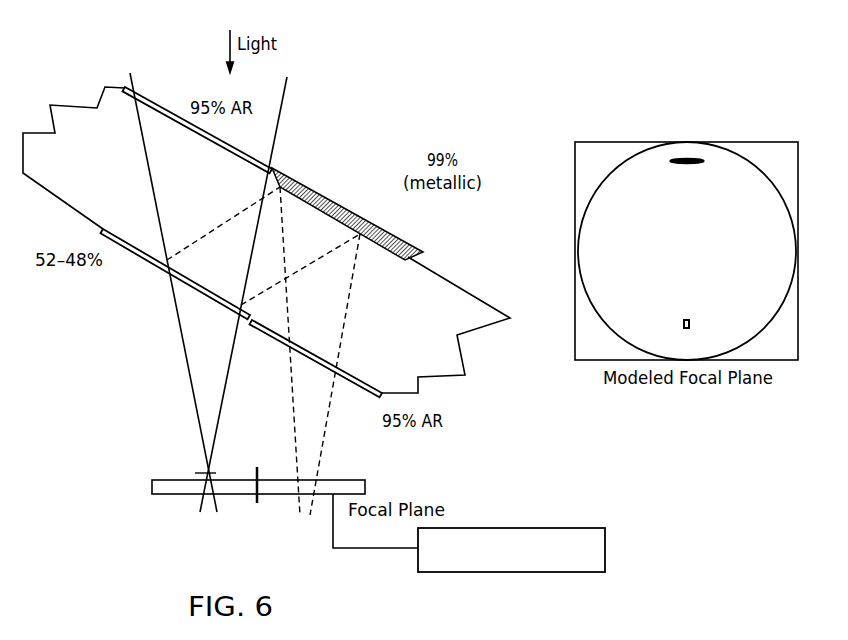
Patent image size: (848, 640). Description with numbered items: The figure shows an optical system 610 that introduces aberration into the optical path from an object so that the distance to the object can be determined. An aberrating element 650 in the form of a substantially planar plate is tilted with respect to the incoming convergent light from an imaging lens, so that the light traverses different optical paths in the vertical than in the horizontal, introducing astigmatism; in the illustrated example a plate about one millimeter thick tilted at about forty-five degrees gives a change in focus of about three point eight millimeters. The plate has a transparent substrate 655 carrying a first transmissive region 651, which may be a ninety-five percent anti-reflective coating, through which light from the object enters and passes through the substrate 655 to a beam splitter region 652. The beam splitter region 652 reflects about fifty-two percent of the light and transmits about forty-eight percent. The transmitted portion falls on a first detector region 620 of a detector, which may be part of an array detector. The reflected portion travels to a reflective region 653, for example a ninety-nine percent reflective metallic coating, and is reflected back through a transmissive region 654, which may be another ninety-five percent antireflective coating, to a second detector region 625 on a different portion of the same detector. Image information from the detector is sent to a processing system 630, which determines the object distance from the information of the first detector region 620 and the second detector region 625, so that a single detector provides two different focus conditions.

The optical system 610 is at (57, 350).
The first detector region 620 is at (194, 478).
The second detector region 625 is at (302, 478).
The processing system 630 is at (588, 527).
The aberrating element 650 is at (78, 104).
The first transmissive region 651 is at (213, 150).
The beam splitter region 652 is at (116, 228).
The reflective region 653 is at (340, 198).
The transmissive region 654 is at (370, 388).
The transparent substrate 655 is at (445, 305).